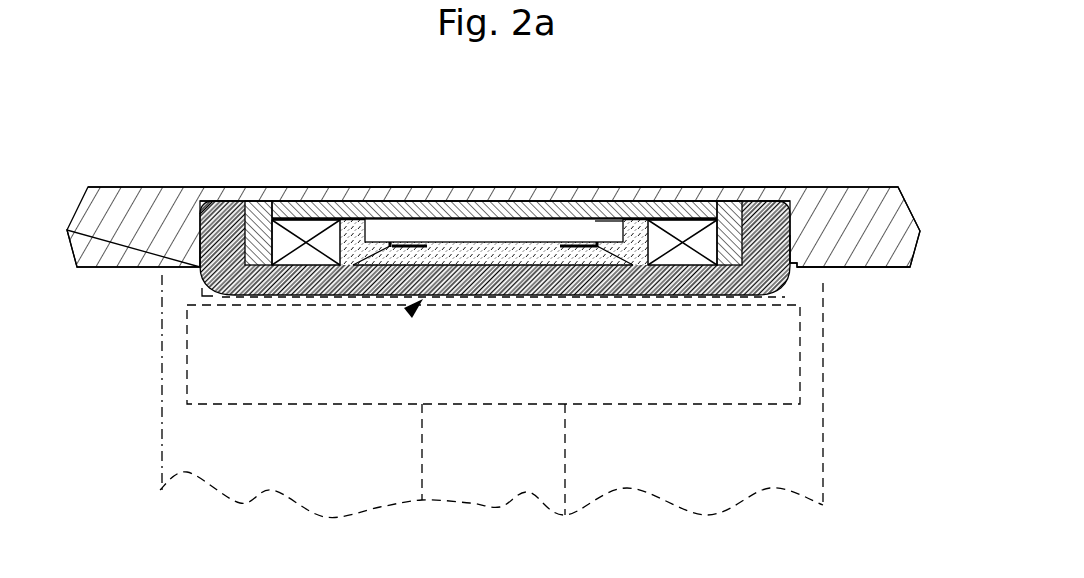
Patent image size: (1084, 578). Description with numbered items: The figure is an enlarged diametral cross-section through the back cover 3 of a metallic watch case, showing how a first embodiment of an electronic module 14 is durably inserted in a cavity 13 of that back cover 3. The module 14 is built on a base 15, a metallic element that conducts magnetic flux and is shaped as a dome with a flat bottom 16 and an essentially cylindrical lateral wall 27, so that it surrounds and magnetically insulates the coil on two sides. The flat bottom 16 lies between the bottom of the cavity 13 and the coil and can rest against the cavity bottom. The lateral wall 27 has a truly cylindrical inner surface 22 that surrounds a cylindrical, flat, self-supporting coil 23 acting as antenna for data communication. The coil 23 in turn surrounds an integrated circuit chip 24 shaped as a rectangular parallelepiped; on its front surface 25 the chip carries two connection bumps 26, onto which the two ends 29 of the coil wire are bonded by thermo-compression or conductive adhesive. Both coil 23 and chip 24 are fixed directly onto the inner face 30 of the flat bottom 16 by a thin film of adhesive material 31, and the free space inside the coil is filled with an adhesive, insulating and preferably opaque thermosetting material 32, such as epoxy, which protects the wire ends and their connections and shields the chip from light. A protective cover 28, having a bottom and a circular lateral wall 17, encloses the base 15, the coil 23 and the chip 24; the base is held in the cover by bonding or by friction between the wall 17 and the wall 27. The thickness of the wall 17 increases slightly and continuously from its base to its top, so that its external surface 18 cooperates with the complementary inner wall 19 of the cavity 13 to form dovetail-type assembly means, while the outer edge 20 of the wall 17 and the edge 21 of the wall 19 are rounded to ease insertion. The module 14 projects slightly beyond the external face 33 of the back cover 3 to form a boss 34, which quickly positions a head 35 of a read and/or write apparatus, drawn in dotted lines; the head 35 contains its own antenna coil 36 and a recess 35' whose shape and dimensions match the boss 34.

The back cover 3 is at (842, 203).
The cavity 13 is at (787, 274).
The electronic module 14 is at (410, 310).
The base 15 is at (455, 202).
The flat bottom 16 is at (567, 210).
The lateral wall 17 is at (214, 247).
The external surface 18 is at (200, 268).
The inner wall 19 is at (207, 243).
The outer edge 20 is at (778, 206).
The edge 21 is at (797, 264).
The inner surface 22 is at (263, 228).
The coil 23 is at (293, 228).
The integrated circuit chip 24 is at (475, 237).
The front surface 25 is at (513, 248).
The bumps 26 is at (418, 250).
The lateral wall 27 is at (735, 229).
The protective cover 28 is at (653, 290).
The ends 29 is at (424, 249).
The inner face 30 is at (609, 217).
The adhesive material 31 is at (407, 219).
The thermosetting material 32 is at (541, 254).
The external face 33 is at (883, 268).
The boss 34 is at (727, 290).
The head 35 is at (516, 396).
The recess 35' is at (549, 291).
The coil 36 is at (783, 362).